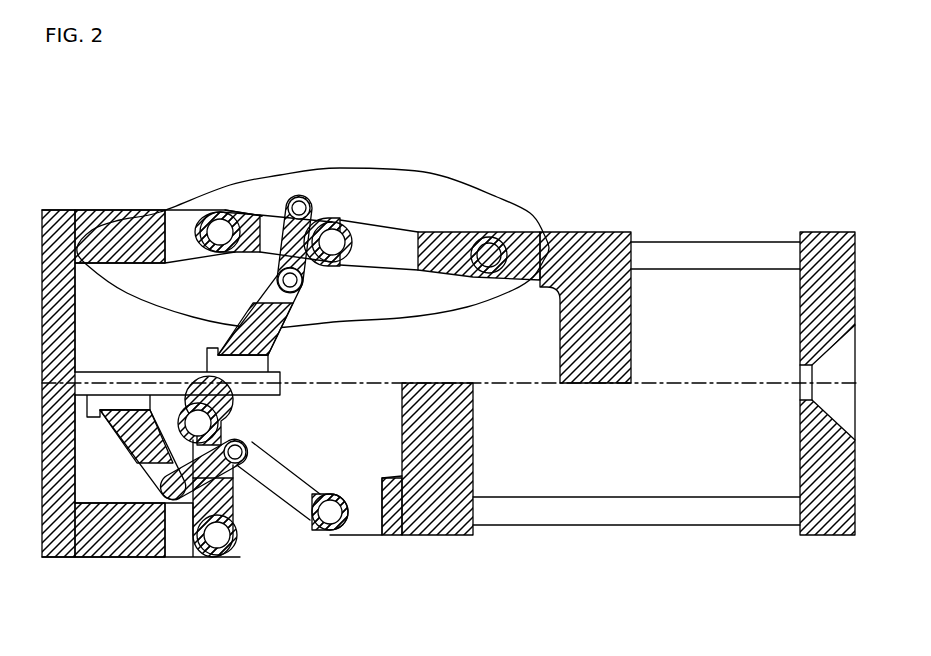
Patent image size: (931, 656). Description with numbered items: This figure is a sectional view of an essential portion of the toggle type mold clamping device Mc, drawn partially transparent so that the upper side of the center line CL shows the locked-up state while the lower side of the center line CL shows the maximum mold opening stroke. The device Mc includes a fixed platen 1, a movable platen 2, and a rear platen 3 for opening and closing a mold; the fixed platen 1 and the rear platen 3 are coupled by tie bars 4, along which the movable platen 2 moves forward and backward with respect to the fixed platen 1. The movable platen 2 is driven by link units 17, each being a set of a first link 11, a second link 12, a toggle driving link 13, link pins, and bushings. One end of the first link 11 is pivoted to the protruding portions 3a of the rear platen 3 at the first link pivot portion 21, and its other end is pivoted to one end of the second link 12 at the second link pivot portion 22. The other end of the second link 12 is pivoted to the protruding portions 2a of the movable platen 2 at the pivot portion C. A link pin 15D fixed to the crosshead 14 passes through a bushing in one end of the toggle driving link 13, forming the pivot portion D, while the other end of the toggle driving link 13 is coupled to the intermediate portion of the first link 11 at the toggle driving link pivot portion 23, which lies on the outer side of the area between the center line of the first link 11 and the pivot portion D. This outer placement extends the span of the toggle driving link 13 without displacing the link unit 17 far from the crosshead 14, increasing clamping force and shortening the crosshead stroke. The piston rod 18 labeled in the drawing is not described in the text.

The fixed platen 1 is at (826, 232).
The movable platen 2 is at (590, 232).
The protruding portions of the movable platen 2a is at (530, 232).
The rear platen 3 is at (98, 210).
The protruding portions of the rear platen 3a is at (175, 210).
The tie bars 4 is at (712, 242).
The first link 11 is at (255, 218).
The second link 12 is at (428, 230).
The toggle driving link 13 is at (308, 198).
The crosshead 14 is at (62, 210).
The link pin 15D is at (302, 280).
The link unit 17 is at (220, 195).
The piston rod 18 is at (165, 372).
The first link pivot portion 21 is at (195, 218).
The second link pivot portion 22 is at (345, 225).
The toggle driving link pivot portion 23 is at (298, 197).
The pivot portion C is at (482, 238).
The pivot portion D is at (293, 307).
The mold clamping device Mc is at (465, 148).
The center line CL is at (466, 383).